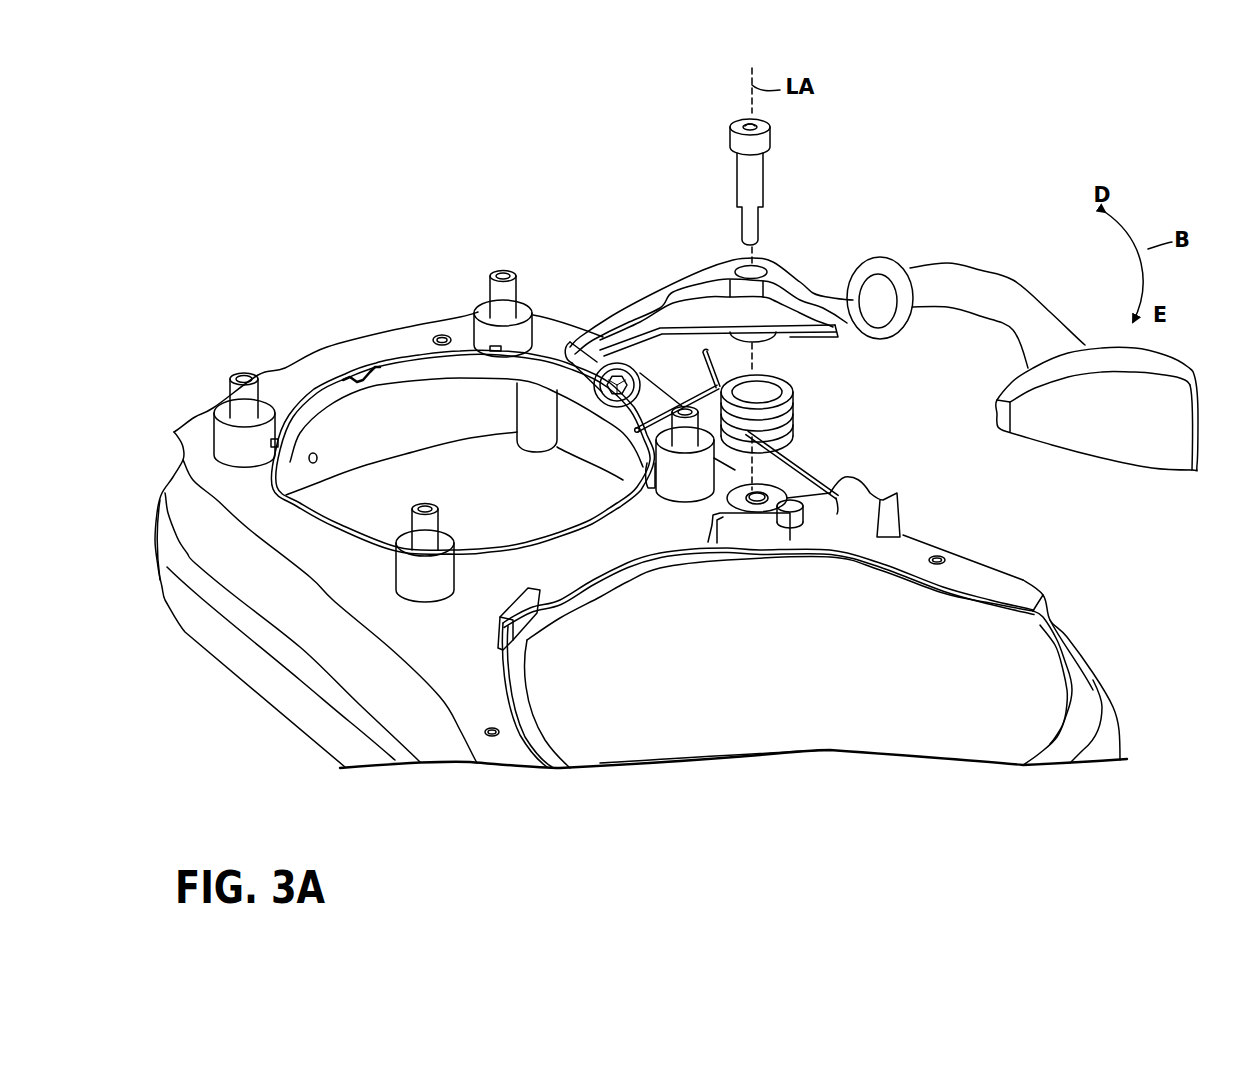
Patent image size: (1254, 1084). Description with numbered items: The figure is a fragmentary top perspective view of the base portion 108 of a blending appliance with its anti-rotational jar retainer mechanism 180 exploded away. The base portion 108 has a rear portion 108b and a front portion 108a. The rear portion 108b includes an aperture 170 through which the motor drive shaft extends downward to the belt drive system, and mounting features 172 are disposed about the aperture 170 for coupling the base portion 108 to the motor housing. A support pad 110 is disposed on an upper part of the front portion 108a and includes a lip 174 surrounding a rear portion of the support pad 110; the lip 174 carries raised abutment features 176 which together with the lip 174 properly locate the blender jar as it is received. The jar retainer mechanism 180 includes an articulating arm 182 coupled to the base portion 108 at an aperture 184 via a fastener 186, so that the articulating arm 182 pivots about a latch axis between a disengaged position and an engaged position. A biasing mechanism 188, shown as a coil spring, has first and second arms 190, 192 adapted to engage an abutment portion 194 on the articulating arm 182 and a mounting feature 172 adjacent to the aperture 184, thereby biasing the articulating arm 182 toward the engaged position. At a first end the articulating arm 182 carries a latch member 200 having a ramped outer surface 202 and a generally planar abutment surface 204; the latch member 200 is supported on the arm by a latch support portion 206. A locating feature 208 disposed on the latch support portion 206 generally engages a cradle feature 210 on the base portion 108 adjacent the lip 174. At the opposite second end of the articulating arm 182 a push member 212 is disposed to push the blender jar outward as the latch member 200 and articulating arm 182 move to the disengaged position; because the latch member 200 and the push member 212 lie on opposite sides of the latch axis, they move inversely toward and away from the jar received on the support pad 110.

The base portion 108 is at (161, 457).
The front portion 108a is at (1117, 720).
The rear portion 108b is at (163, 580).
The support pad 110 is at (822, 690).
The aperture 170 is at (413, 410).
The mounting features 172 is at (213, 418).
The lip 174 is at (907, 567).
The raised abutment features 176 is at (530, 613).
The jar retainer mechanism 180 is at (829, 222).
The articulating arm 182 is at (917, 262).
The aperture 184 is at (762, 487).
The fastener 186 is at (752, 175).
The biasing mechanism 188 is at (795, 393).
The first arm 190 is at (657, 360).
The second arm 192 is at (702, 358).
The abutment portion 194 is at (633, 357).
The latch member 200 is at (1165, 348).
The ramped outer surface 202 is at (1132, 425).
The abutment surface 204 is at (997, 413).
The latch support portion 206 is at (1015, 317).
The locating feature 208 is at (875, 258).
The cradle feature 210 is at (870, 497).
The push member 212 is at (577, 353).